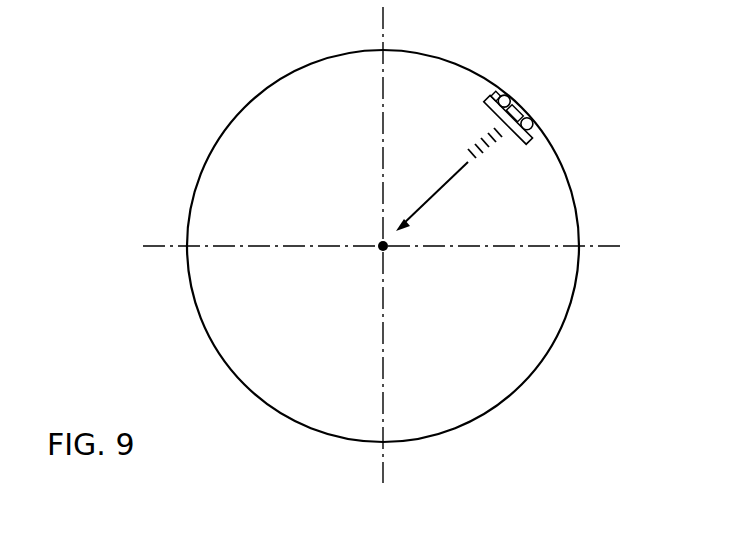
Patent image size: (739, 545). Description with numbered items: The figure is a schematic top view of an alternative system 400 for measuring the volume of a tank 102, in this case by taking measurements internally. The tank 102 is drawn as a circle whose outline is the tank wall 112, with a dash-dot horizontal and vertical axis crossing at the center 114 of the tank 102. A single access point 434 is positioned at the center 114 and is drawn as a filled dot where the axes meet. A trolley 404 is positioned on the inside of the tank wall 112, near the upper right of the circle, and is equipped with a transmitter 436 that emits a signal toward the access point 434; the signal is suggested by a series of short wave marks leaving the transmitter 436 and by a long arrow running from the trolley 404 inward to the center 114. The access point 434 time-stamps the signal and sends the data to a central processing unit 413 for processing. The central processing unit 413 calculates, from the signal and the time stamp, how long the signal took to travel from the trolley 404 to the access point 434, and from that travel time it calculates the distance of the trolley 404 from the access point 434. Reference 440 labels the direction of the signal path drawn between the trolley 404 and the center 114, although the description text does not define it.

The system for measuring the volume of a tank 400 is at (187, 96).
The tank 102 is at (496, 384).
The tank wall 112 is at (545, 360).
The center of the tank 114 is at (369, 229).
The access point 434 is at (380, 251).
The trolley 404 is at (516, 104).
The central processing unit 413 is at (497, 104).
The transmitter 436 is at (494, 122).
The signal path 440 is at (511, 156).